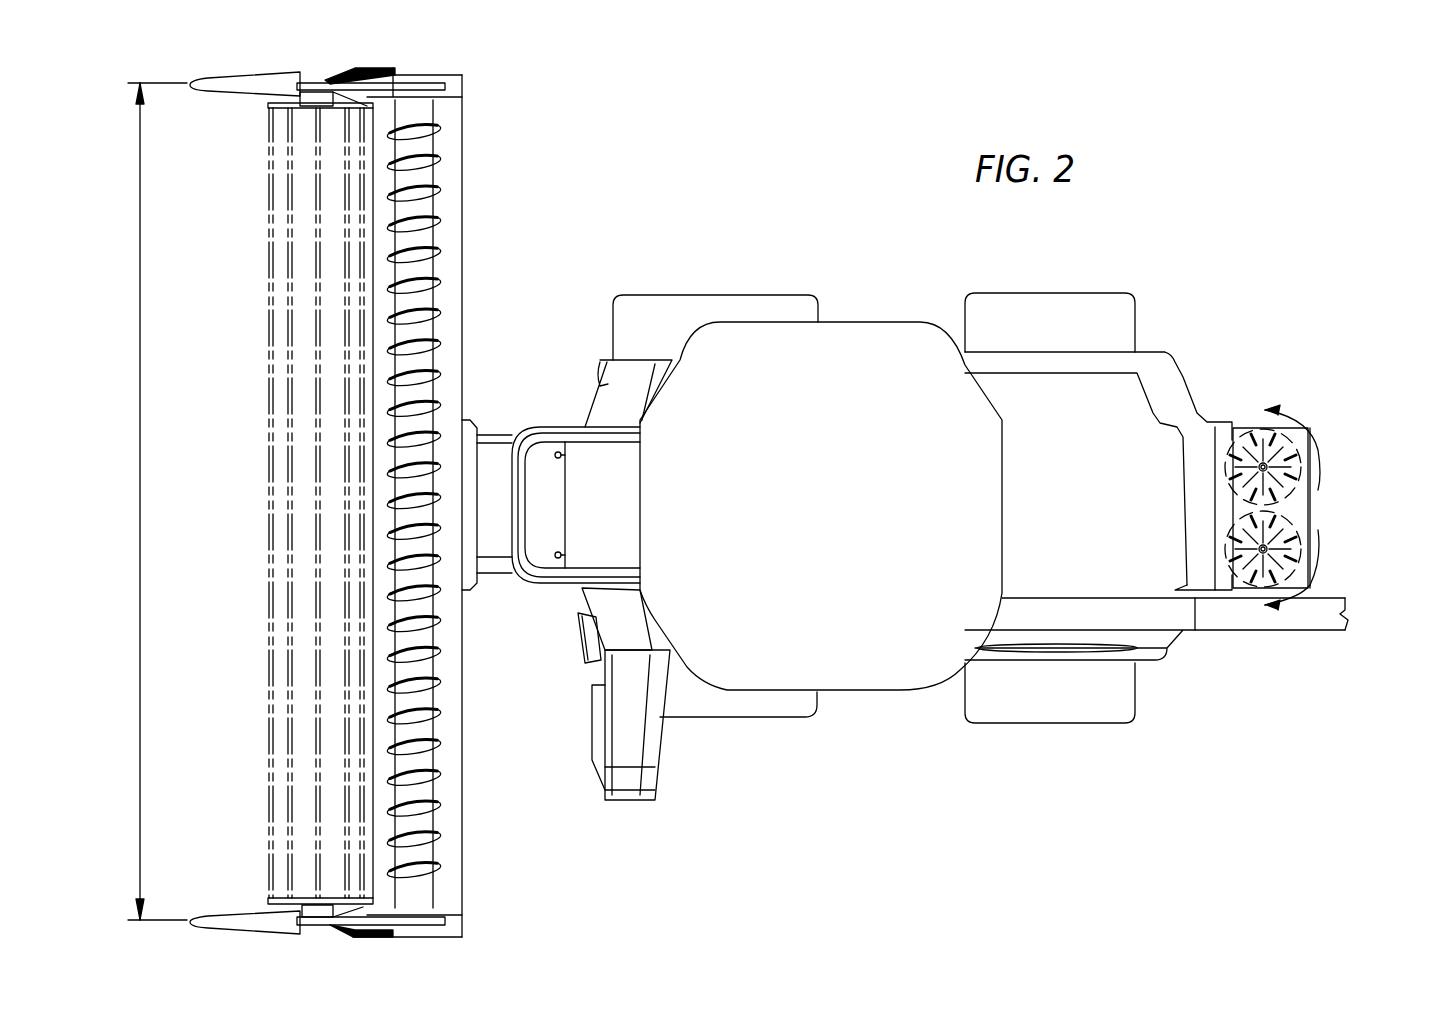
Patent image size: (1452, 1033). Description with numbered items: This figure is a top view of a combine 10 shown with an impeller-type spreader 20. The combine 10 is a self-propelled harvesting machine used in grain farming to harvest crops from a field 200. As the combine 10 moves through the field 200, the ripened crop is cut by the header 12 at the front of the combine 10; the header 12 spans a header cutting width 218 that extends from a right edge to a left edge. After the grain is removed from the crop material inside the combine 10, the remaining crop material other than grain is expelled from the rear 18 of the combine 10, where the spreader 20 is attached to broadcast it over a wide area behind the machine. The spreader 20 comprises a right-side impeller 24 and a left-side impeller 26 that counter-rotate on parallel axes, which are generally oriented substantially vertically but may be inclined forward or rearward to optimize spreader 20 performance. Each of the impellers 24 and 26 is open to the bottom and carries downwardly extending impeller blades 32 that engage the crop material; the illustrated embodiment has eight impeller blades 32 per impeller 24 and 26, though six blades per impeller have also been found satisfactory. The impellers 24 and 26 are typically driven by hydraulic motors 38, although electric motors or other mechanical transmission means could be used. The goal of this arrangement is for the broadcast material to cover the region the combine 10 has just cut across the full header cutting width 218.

The combine 10 is at (845, 556).
The header 12 is at (462, 832).
The rear of the combine 18 is at (1368, 528).
The spreader 20 is at (1312, 505).
The right-side impeller 24 is at (1232, 462).
The left-side impeller 26 is at (1283, 572).
The impeller blades 32 is at (1258, 432).
The hydraulic motors 38 is at (1262, 549).
The field 200 is at (903, 807).
The header cutting width 218 is at (152, 501).